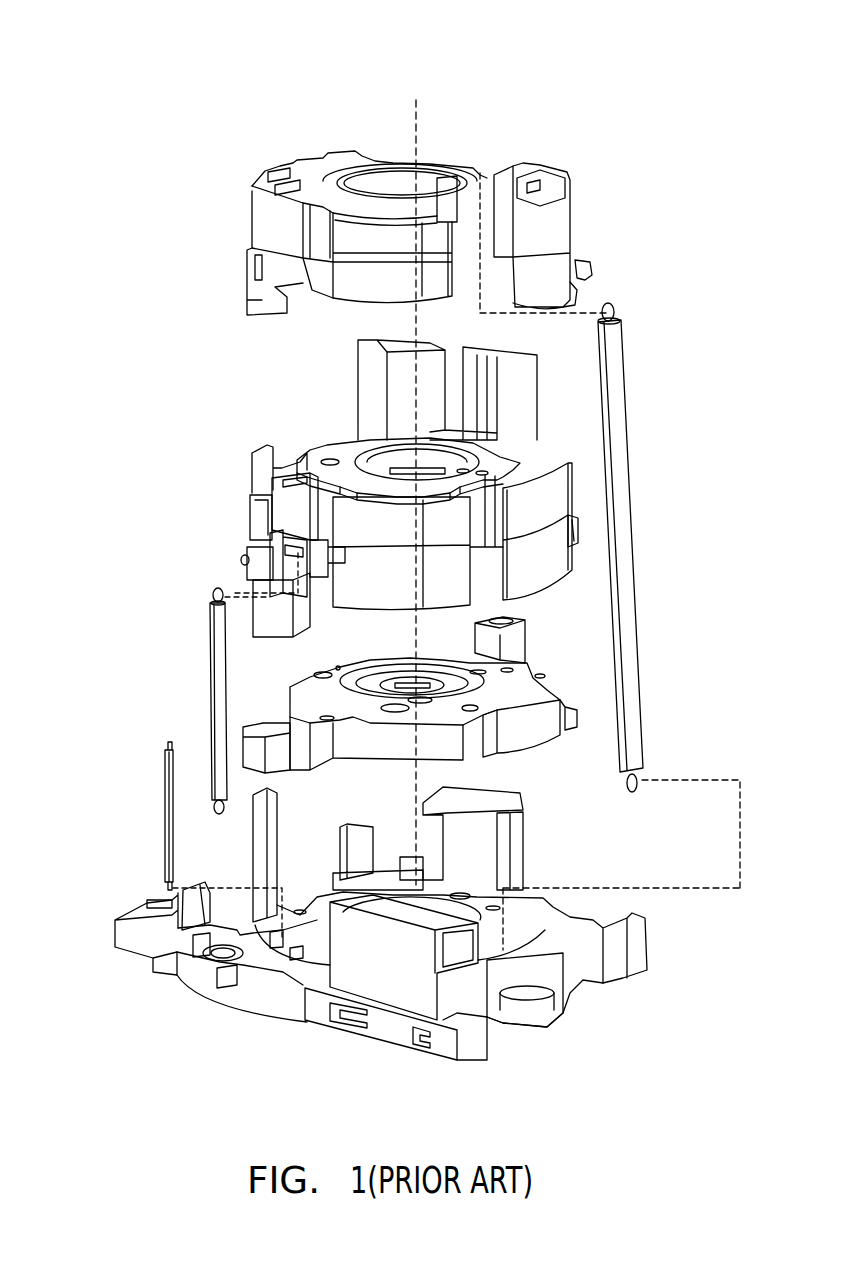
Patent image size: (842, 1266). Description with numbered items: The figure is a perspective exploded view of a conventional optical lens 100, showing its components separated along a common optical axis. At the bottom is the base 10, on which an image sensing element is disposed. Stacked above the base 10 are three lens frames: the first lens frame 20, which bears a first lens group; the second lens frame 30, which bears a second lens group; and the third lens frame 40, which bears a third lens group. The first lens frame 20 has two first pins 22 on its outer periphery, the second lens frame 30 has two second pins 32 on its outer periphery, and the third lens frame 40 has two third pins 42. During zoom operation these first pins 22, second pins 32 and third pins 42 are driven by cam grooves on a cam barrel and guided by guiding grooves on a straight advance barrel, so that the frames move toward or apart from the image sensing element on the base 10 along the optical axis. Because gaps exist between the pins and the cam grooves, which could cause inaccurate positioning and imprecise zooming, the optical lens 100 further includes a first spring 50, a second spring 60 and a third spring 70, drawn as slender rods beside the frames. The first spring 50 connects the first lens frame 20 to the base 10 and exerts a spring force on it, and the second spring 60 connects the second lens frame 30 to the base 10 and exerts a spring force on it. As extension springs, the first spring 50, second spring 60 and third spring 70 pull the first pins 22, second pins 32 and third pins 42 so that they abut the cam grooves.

The optical lens 100 is at (754, 49).
The base 10 is at (585, 982).
The first lens frame 20 is at (525, 737).
The first pins 22 is at (243, 760).
The second lens frame 30 is at (567, 487).
The second pins 32 is at (243, 556).
The third lens frame 40 is at (560, 216).
The third pins 42 is at (245, 302).
The first spring 50 is at (165, 840).
The second spring 60 is at (212, 681).
The third spring 70 is at (628, 656).